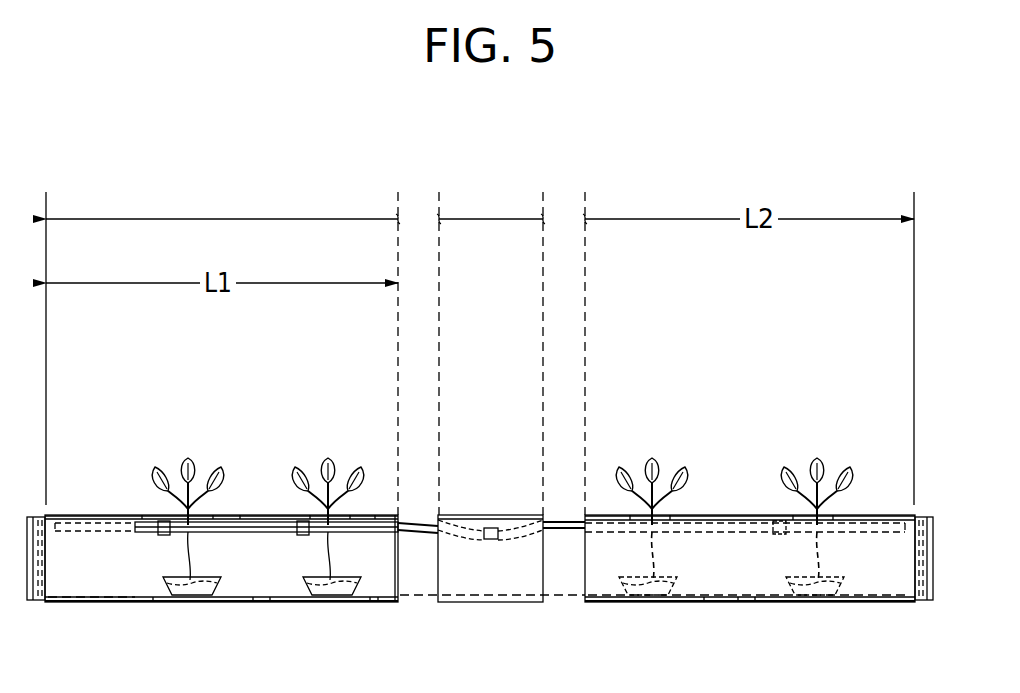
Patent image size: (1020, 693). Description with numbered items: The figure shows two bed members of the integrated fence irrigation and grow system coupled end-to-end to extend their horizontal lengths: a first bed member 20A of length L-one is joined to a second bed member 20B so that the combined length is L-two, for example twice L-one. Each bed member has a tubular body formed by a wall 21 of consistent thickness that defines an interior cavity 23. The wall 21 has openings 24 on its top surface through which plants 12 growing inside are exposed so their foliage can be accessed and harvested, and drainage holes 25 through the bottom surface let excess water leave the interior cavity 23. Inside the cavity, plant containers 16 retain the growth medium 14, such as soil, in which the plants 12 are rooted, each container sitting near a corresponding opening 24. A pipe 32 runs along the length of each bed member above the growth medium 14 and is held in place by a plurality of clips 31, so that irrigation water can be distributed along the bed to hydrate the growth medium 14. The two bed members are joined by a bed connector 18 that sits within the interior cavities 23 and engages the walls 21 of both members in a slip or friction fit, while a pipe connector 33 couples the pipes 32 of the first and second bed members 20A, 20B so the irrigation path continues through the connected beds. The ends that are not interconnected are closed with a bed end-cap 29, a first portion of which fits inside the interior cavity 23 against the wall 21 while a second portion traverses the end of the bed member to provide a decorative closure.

The plants 12 is at (292, 470).
The growth medium 14 is at (189, 592).
The plant containers 16 is at (331, 592).
The bed connector 18 is at (503, 604).
The first bed member 20A is at (103, 515).
The second bed member 20B is at (603, 515).
The wall 21 is at (265, 514).
The interior cavity 23 is at (275, 574).
The openings 24 is at (112, 522).
The drainage holes 25 is at (143, 603).
The bed end-cap 29 is at (28, 592).
The clips 31 is at (162, 522).
The pipe 32 is at (144, 517).
The pipe connector 33 is at (489, 540).